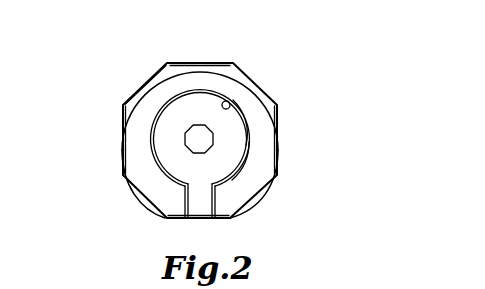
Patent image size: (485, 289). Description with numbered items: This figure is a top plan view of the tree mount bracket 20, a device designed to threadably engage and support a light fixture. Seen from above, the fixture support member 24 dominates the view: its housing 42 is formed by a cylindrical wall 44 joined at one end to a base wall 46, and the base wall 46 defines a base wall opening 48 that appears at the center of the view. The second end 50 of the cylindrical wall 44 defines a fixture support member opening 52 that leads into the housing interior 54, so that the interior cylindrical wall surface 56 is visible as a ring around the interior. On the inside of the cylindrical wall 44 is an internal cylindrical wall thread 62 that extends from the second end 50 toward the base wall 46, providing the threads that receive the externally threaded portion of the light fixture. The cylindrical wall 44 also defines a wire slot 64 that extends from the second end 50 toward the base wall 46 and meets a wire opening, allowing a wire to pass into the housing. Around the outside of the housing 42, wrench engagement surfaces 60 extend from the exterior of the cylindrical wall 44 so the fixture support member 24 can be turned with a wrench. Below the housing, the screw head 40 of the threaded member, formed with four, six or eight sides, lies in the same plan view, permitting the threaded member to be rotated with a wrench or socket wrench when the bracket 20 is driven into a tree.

The tree mount bracket 20 is at (194, 70).
The wrench engagement surfaces 60 is at (201, 115).
The fixture support member 24 is at (140, 95).
The housing 42 is at (128, 130).
The cylindrical wall 44 is at (130, 150).
The internal cylindrical wall thread 62 is at (170, 163).
The base wall 46 is at (226, 158).
The wire slot 64 is at (210, 210).
The screw head 40 is at (213, 92).
The fixture support member opening 52 is at (205, 205).
The base wall opening 48 is at (197, 123).
The interior cylindrical wall surface 56 is at (229, 103).
The second end of the cylindrical wall 50 is at (229, 107).
The housing interior 54 is at (233, 179).